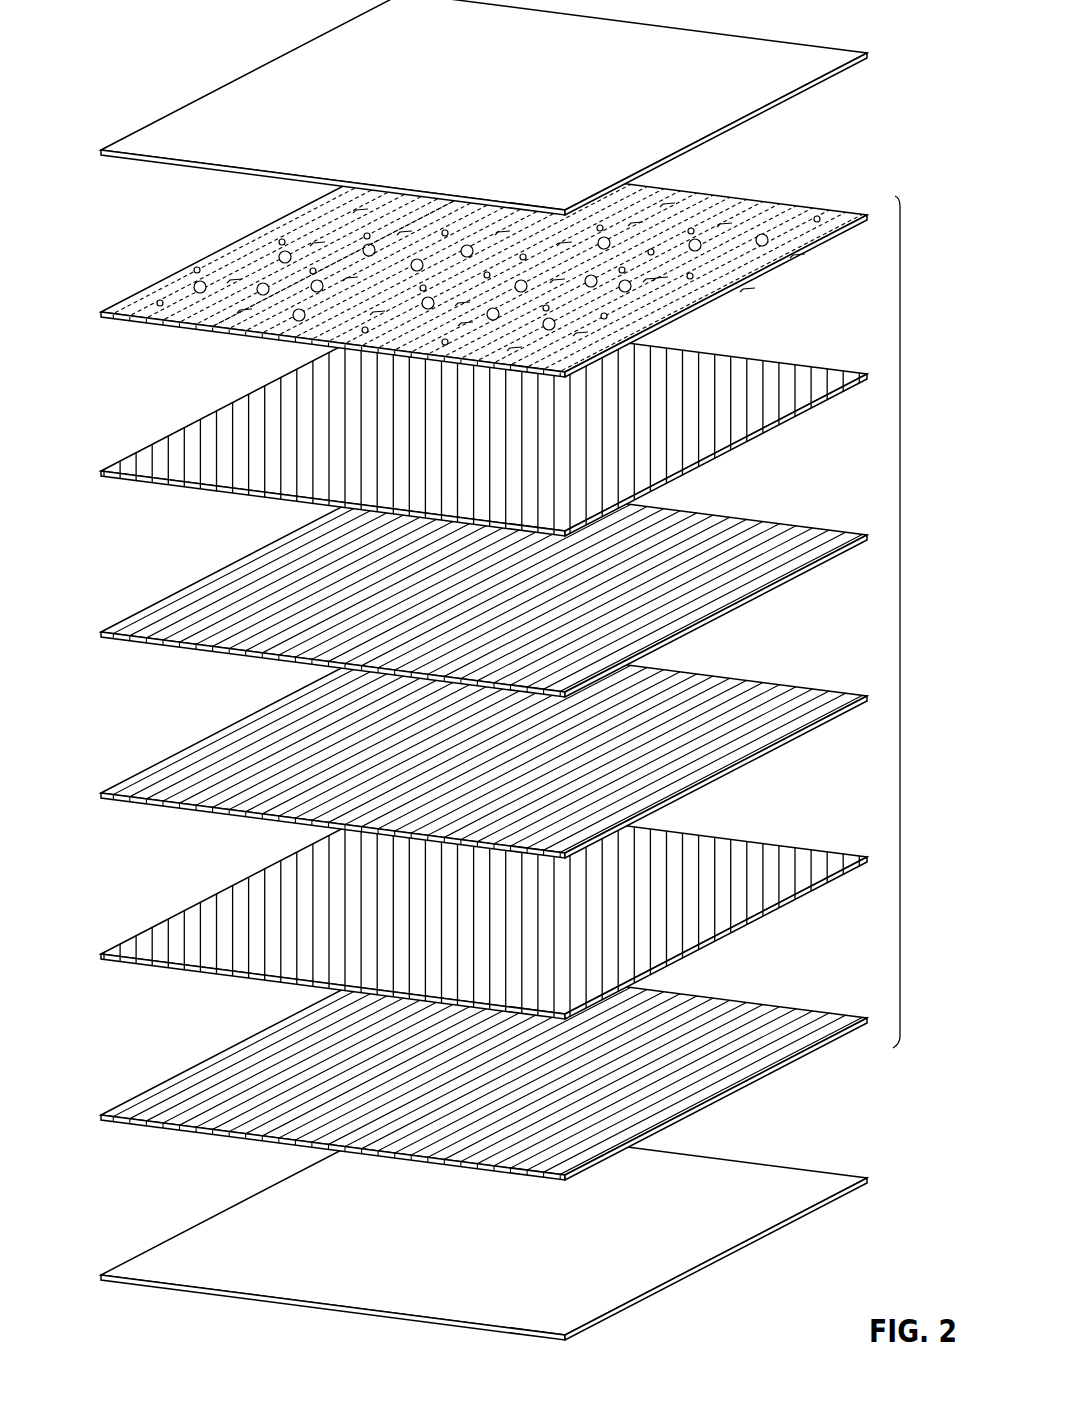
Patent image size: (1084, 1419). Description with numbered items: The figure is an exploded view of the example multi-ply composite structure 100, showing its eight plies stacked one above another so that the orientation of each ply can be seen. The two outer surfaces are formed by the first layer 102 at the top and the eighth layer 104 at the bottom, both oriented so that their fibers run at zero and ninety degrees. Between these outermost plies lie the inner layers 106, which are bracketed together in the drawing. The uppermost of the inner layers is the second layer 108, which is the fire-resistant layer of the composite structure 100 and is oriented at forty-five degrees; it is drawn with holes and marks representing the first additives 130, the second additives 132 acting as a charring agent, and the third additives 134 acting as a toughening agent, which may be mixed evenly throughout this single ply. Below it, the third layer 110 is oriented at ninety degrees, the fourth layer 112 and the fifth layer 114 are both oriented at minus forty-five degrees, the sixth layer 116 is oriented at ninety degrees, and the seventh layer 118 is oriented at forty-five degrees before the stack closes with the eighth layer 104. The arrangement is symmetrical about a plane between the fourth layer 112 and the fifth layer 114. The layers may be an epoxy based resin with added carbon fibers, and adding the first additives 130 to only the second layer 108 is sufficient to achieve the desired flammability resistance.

The composite structure 100 is at (866, 116).
The first layer 102 is at (101, 152).
The eighth layer 104 is at (156, 1288).
The inner layers 106 is at (900, 621).
The second layer 108 is at (101, 313).
The third layer 110 is at (101, 472).
The fourth layer 112 is at (101, 633).
The fifth layer 114 is at (101, 794).
The sixth layer 116 is at (101, 955).
The seventh layer 118 is at (101, 1116).
The first additives 130 is at (160, 300).
The second additives 132 is at (200, 281).
The third additives 134 is at (227, 313).